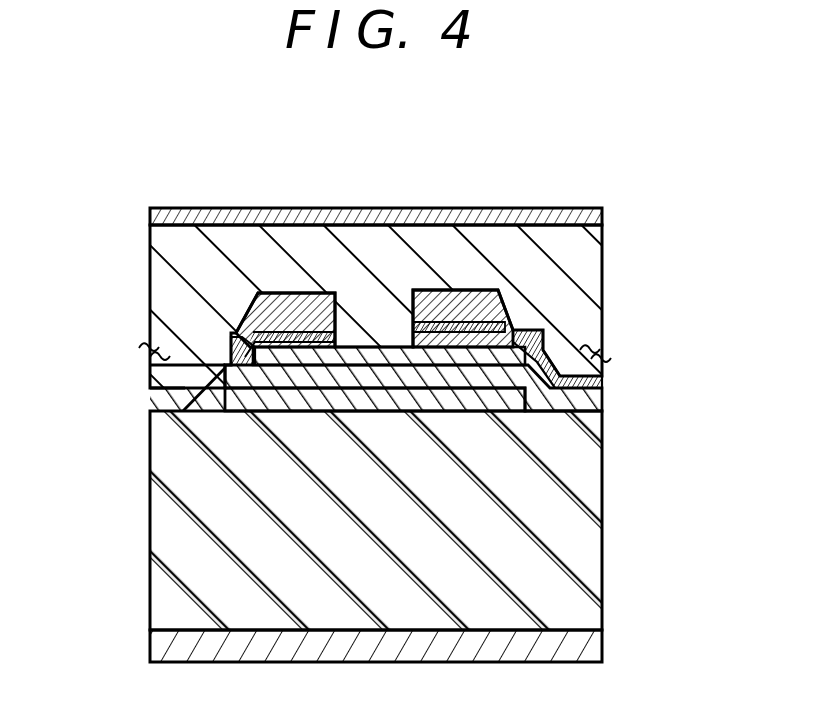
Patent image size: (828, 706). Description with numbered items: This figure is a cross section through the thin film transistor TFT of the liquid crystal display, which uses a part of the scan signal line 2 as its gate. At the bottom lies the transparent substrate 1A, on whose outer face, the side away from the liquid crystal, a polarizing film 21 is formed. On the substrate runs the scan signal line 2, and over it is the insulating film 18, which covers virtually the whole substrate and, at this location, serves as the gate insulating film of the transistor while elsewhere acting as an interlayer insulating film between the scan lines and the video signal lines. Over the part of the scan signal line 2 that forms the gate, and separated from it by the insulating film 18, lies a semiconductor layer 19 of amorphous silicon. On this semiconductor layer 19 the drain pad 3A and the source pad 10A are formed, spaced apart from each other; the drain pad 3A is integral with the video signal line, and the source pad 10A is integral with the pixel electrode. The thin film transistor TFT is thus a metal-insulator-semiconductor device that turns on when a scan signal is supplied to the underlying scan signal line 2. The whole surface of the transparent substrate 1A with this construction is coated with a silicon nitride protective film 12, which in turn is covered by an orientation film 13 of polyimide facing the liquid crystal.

The transparent substrate 1A is at (168, 508).
The scan signal line 2 is at (540, 412).
The drain pad 3A is at (268, 292).
The source pad 10A is at (465, 303).
The silicon nitride protective film 12 is at (585, 265).
The orientation film 13 is at (541, 209).
The insulating film 18 is at (227, 367).
The semiconductor layer 19 is at (372, 345).
The polarizing film 21 is at (600, 638).
The thin film transistor TFT is at (348, 280).